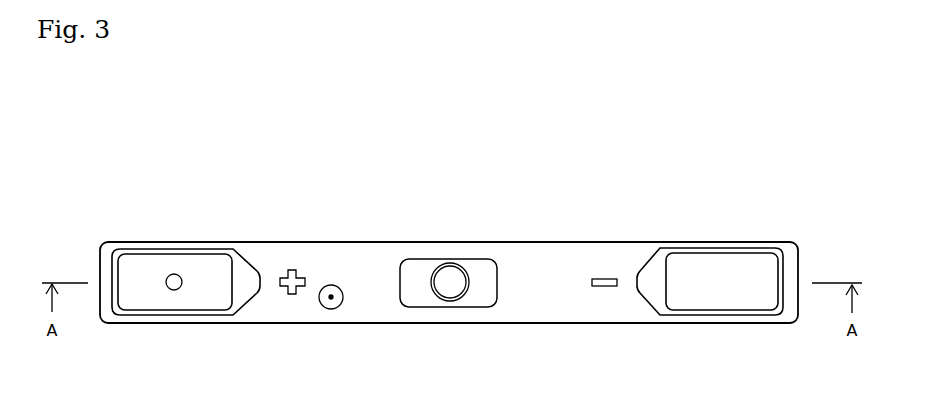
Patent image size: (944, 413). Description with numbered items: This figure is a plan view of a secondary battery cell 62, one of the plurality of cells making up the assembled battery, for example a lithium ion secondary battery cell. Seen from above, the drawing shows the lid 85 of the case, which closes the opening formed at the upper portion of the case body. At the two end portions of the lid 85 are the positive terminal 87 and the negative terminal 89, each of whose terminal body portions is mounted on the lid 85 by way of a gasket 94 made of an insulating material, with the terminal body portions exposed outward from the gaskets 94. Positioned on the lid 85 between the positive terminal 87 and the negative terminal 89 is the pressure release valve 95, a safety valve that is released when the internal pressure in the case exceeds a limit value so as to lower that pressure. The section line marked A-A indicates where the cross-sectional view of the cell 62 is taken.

The cell 62 is at (767, 209).
The lid 85 is at (376, 255).
The positive terminal 87 is at (174, 262).
The negative terminal 89 is at (713, 268).
The gasket 94 is at (247, 277).
The pressure release valve 95 is at (451, 275).